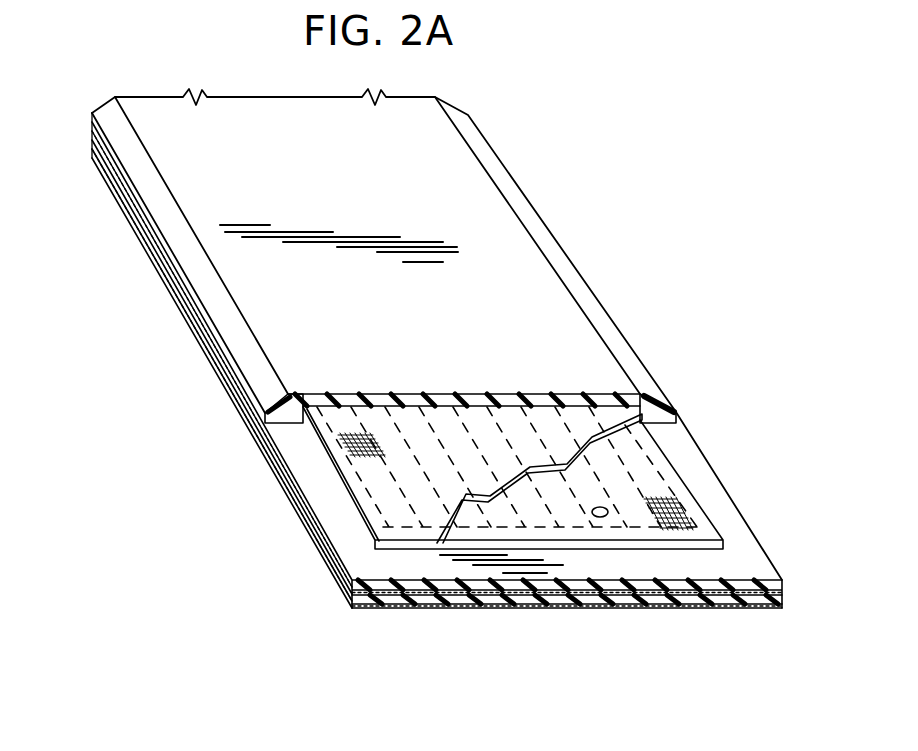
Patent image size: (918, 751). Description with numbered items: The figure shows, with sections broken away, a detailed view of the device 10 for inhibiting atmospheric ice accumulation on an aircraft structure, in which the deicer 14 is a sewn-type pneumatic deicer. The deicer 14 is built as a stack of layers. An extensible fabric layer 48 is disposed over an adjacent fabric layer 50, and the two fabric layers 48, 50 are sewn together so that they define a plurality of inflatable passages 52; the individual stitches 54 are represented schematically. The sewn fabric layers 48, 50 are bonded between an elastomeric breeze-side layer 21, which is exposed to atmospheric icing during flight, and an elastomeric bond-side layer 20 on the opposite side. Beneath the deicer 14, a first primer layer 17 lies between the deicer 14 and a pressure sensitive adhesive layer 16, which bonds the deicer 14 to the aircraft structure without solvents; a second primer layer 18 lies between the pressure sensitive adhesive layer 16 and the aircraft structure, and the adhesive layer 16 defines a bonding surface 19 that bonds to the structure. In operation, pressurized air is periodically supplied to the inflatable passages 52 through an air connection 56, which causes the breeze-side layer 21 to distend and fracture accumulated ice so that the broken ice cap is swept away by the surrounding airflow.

The device 10 is at (550, 183).
The deicer 14 is at (518, 257).
The elastomeric breeze-side layer 21 is at (600, 398).
The pressure sensitive adhesive layer 16 is at (458, 598).
The first primer layer 17 is at (686, 592).
The second primer layer 18 is at (557, 605).
The bonding surface 19 is at (503, 608).
The elastomeric bond-side layer 20 is at (615, 584).
The extensible fabric layer 48 is at (375, 548).
The fabric layer 50 is at (418, 550).
The inflatable passages 52 is at (348, 500).
The stitches 54 is at (357, 424).
The air connection 56 is at (607, 510).